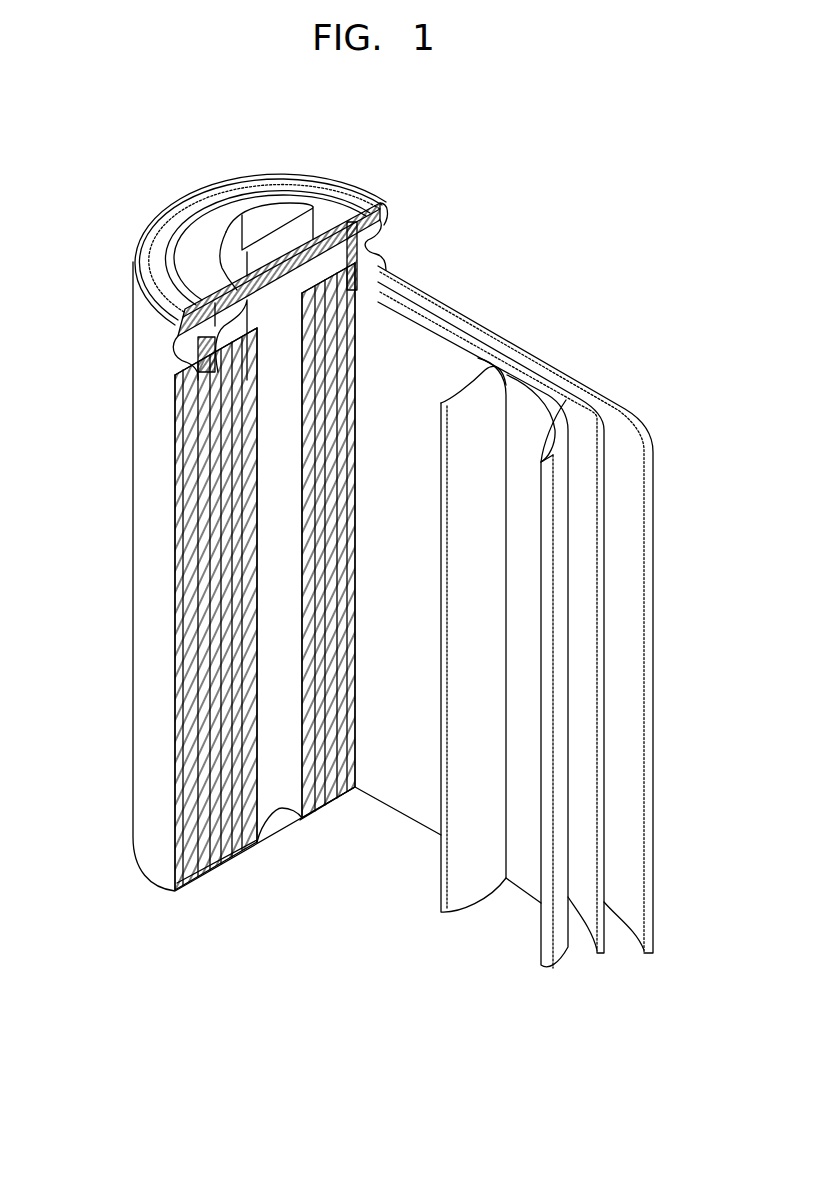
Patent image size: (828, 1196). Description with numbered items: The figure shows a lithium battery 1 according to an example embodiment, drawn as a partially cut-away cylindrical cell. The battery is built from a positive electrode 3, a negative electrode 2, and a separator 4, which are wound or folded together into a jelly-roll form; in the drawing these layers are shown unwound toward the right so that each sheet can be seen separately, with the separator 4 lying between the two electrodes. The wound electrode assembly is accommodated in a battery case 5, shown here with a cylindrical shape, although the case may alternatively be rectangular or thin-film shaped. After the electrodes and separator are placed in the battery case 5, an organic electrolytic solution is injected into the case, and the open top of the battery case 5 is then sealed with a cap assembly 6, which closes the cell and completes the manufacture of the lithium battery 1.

The lithium battery 1 is at (571, 200).
The negative electrode 2 is at (640, 430).
The positive electrode 3 is at (528, 383).
The separator 4 is at (450, 333).
The battery case 5 is at (143, 573).
The cap assembly 6 is at (253, 217).